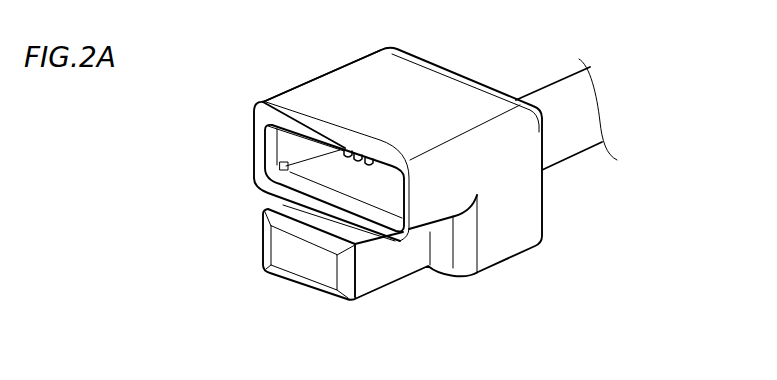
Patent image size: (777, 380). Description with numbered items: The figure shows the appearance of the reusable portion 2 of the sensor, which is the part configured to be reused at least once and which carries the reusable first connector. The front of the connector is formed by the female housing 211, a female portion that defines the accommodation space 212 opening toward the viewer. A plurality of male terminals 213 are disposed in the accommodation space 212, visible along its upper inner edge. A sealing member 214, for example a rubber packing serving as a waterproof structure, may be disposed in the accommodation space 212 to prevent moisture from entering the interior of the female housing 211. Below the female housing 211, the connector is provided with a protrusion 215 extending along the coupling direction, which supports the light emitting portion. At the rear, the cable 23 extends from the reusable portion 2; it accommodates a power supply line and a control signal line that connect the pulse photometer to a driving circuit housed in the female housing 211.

The reusable portion 2 is at (247, 109).
The female housing 211 is at (345, 87).
The accommodation space 212 is at (277, 172).
The male terminals 213 is at (358, 155).
The sealing member 214 is at (332, 183).
The protrusion 215 is at (378, 273).
The cable 23 is at (582, 137).